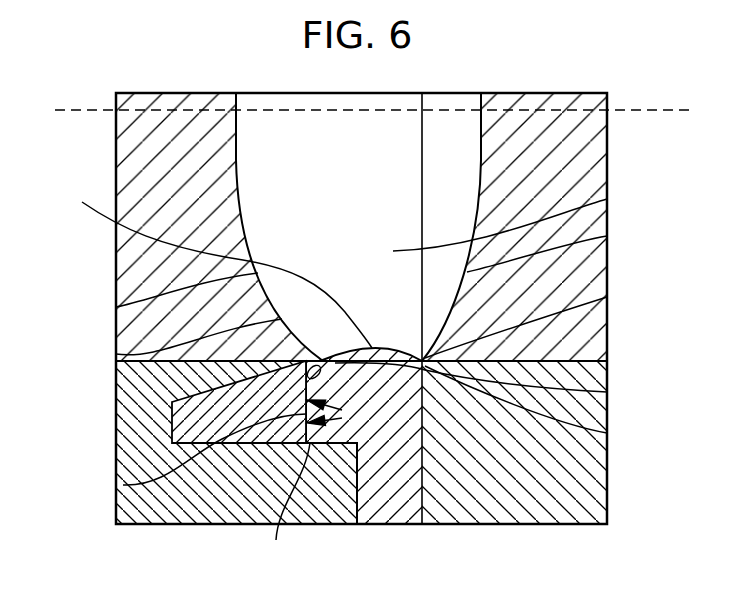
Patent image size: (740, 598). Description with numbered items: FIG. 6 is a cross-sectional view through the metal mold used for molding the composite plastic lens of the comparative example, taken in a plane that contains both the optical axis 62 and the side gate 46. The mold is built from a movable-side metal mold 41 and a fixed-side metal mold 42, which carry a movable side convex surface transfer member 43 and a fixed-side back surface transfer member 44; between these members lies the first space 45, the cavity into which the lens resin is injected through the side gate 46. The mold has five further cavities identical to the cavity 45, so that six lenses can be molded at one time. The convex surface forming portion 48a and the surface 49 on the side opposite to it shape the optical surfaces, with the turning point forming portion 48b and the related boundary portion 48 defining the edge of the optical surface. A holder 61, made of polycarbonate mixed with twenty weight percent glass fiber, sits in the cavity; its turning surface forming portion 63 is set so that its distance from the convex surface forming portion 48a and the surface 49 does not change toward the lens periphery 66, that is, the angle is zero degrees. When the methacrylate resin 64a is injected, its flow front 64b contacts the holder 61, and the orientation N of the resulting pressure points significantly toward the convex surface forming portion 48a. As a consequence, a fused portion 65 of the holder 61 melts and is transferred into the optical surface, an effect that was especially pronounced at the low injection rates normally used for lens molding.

The movable-side metal mold 41 is at (158, 427).
The fixed-side metal mold 42 is at (597, 483).
The movable side convex surface transfer member 43 is at (140, 270).
The fixed-side back surface transfer member 44 is at (597, 147).
The first space 45 is at (607, 199).
The side gate 46 is at (390, 500).
The layer boundary in first upper member 48 is at (116, 307).
The convex surface forming portion 48a is at (116, 354).
The turning point forming portion 48b is at (607, 297).
The surface on the side opposite to the convex surface forming portion 49 is at (607, 236).
The holder 61 is at (172, 406).
The optical axis 62 is at (87, 112).
The turning surface forming portion 63 is at (123, 485).
The resin 64a is at (607, 433).
The flow front 64b is at (204, 270).
The fused portion 65 is at (607, 392).
The lens periphery 66 is at (285, 508).
The orientation of pressure N is at (336, 416).